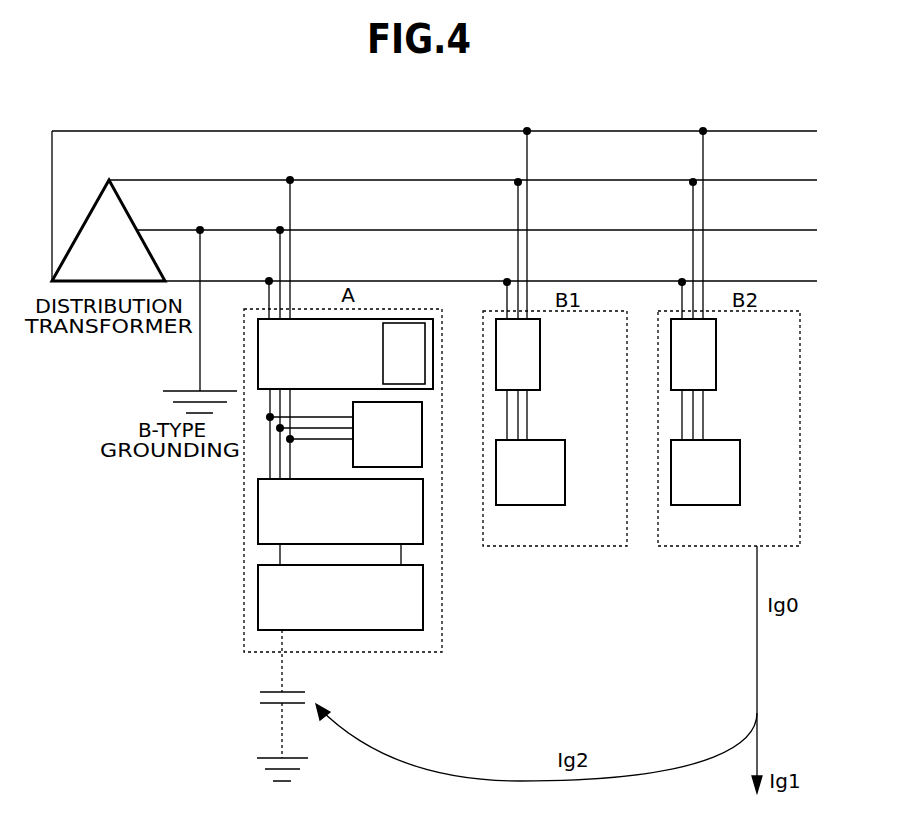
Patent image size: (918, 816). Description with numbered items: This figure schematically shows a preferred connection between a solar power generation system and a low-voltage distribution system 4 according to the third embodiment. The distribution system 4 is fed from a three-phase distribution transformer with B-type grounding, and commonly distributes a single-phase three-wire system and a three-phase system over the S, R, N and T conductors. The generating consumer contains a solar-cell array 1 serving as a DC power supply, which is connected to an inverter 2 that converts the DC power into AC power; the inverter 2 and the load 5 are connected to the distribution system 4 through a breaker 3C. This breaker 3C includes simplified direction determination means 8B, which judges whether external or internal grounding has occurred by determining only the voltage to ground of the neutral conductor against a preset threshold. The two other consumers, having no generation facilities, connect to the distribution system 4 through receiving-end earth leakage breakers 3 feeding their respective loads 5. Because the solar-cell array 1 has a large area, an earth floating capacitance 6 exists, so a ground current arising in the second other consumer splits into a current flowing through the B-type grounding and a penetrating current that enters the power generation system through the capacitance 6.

The solar-cell array 1 is at (340, 597).
The system interconnection inverter 2 is at (340, 511).
The receiving-end earth leakage breaker 3 is at (606, 354).
The breaker 3C is at (345, 354).
The low-voltage distribution system 4 is at (434, 187).
The load 5 is at (546, 453).
The earth floating capacitance 6 is at (271, 693).
The direction determination means 8B is at (404, 353).